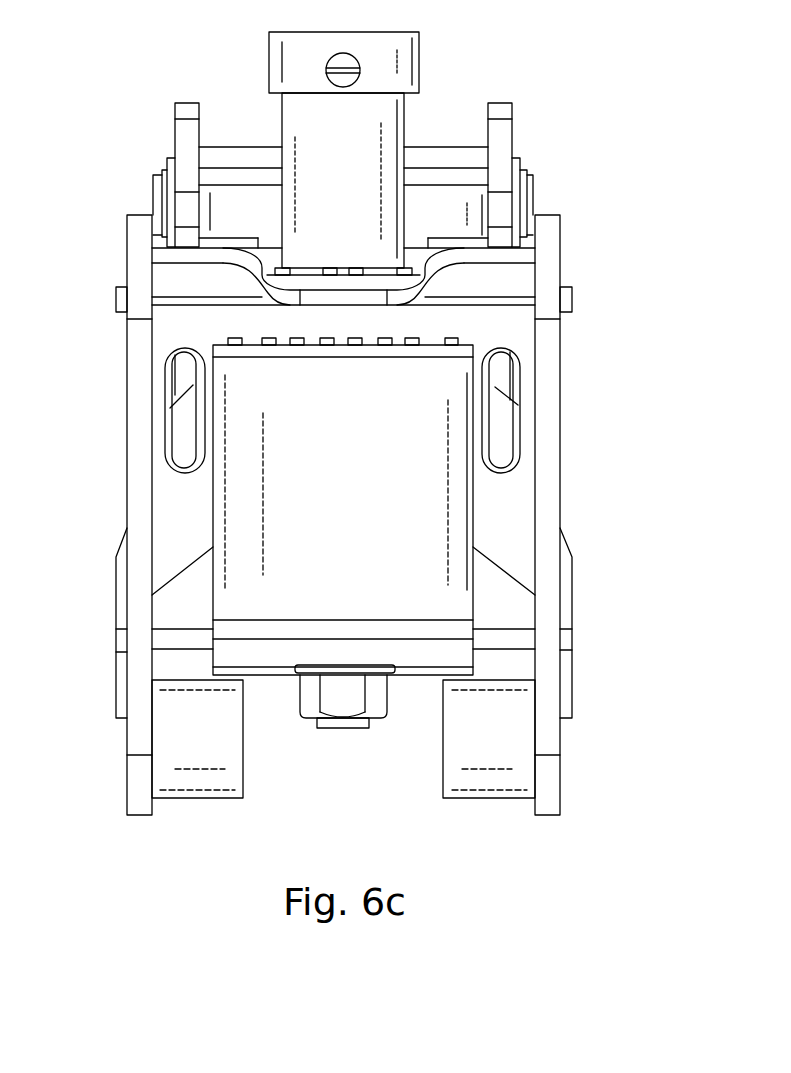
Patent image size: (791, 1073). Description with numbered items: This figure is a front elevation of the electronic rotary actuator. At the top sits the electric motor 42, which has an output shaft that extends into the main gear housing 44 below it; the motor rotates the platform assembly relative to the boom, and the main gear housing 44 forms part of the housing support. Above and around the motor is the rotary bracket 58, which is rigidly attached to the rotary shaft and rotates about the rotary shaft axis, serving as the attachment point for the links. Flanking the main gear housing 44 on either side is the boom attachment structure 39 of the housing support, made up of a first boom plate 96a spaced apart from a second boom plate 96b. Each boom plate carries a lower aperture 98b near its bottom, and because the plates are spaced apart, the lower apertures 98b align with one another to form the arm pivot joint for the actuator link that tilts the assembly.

The boom attachment structure 39 is at (362, 515).
The electric motor 42 is at (282, 120).
The main gear housing 44 is at (233, 522).
The rotary bracket 58 is at (389, 168).
The first boom plate 96a is at (562, 373).
The second boom plate 96b is at (126, 373).
The lower aperture 98b is at (197, 790).